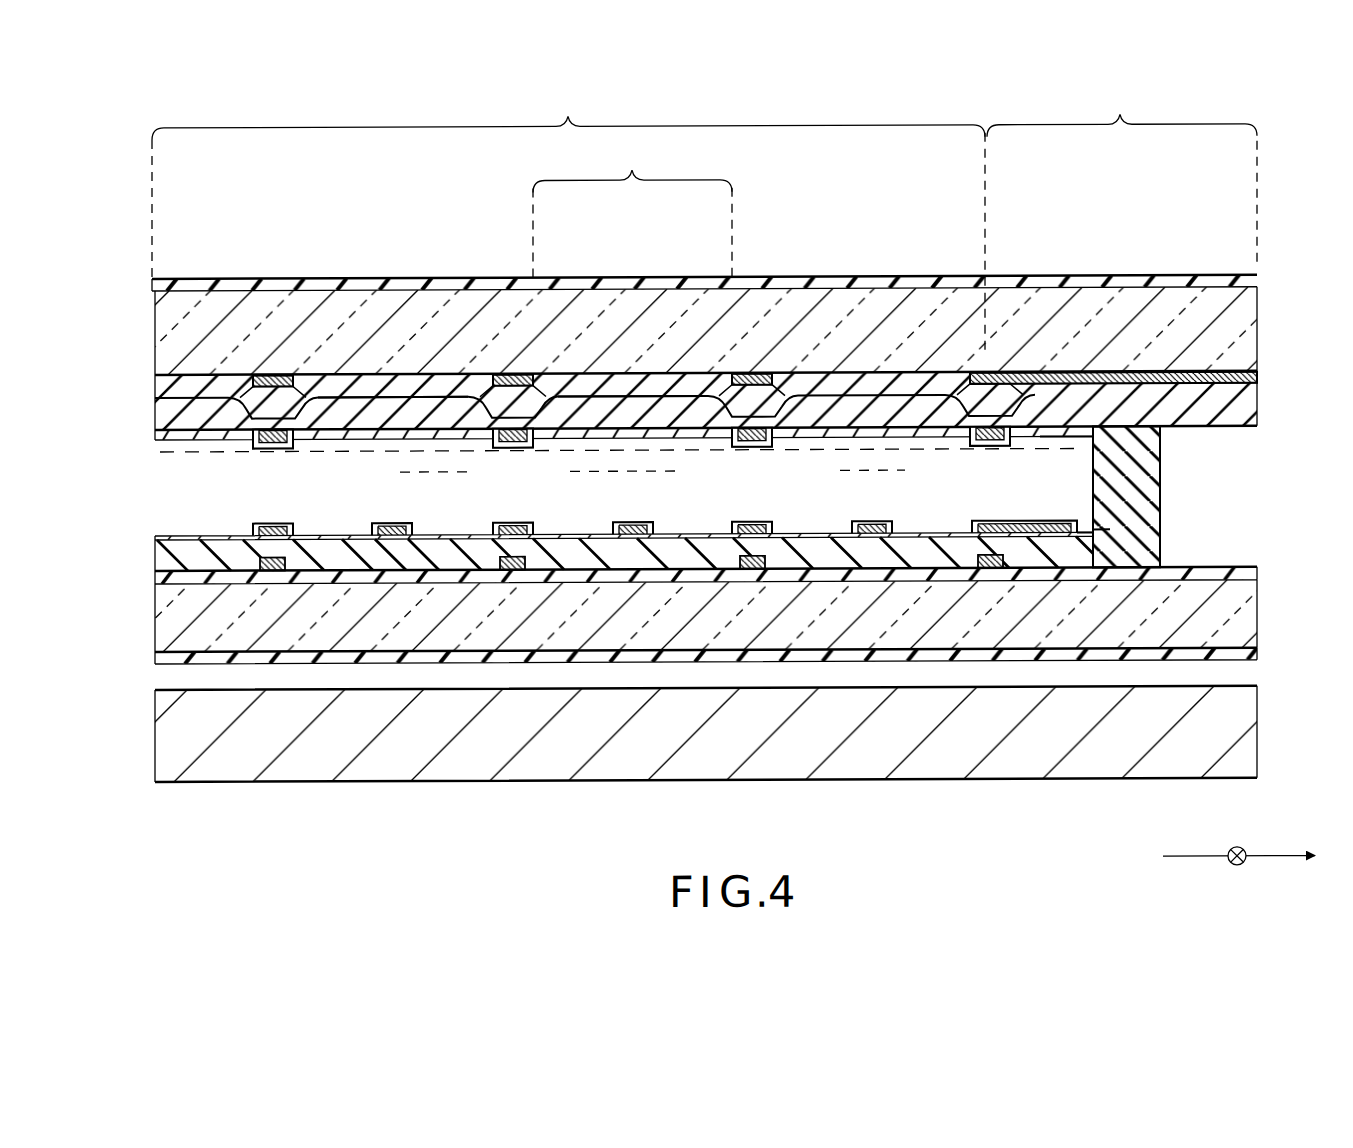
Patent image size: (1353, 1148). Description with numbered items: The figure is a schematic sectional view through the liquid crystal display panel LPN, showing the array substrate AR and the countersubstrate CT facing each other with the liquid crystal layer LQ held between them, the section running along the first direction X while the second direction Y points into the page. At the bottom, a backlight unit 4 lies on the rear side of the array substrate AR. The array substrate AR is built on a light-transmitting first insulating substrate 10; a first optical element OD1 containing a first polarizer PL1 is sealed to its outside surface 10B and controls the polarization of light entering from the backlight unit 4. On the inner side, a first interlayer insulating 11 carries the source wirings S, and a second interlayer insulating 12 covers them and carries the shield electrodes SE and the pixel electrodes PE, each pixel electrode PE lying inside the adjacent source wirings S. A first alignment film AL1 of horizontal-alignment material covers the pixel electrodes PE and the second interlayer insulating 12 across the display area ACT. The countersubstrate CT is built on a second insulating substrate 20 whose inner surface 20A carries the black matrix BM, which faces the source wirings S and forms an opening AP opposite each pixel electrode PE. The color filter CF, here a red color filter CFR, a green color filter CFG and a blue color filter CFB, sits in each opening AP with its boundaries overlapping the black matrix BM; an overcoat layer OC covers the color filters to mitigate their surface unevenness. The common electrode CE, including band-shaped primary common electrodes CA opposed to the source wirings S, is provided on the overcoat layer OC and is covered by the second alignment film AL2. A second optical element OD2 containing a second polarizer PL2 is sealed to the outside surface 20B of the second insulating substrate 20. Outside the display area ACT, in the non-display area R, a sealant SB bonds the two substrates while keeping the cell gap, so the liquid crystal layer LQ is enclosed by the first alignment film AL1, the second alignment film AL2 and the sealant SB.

The outside surface of the second insulating substrate 20B is at (193, 280).
The second optical element OD2 is at (150, 283).
The second polarizer PL2 is at (82, 304).
The countersubstrate CT is at (148, 346).
The second insulating substrate 20 is at (1258, 337).
The liquid crystal display panel LPN is at (1265, 302).
The color filter CF is at (154, 386).
The inner surface of the second insulating substrate 20A is at (180, 392).
The red color filter CFR is at (213, 392).
The green color filter CFG is at (400, 393).
The blue color filter CFB is at (620, 394).
The black matrix BM is at (275, 375).
The overcoat layer OC is at (1258, 417).
The common electrode CE is at (246, 445).
The second alignment film AL2 is at (1098, 436).
The primary common electrode CA is at (288, 428).
The liquid crystal layer LQ is at (155, 532).
The sealant SB is at (1148, 496).
The shield electrode SE is at (280, 523).
The pixel electrode PE is at (395, 541).
The first alignment film AL1 is at (1100, 530).
The second interlayer insulating 12 is at (226, 539).
The source wiring S is at (273, 572).
The first interlayer insulating 11 is at (1258, 582).
The first insulating substrate 10 is at (1258, 626).
The array substrate AR is at (150, 616).
The first optical element OD1 is at (155, 659).
The first polarizer PL1 is at (195, 664).
The outside surface of the first insulating substrate 10B is at (160, 690).
The backlight unit 4 is at (158, 745).
The display area ACT is at (568, 222).
The non-display area R is at (1122, 177).
The opening AP is at (632, 212).
The first direction X is at (1254, 856).
The second direction Y is at (1219, 874).